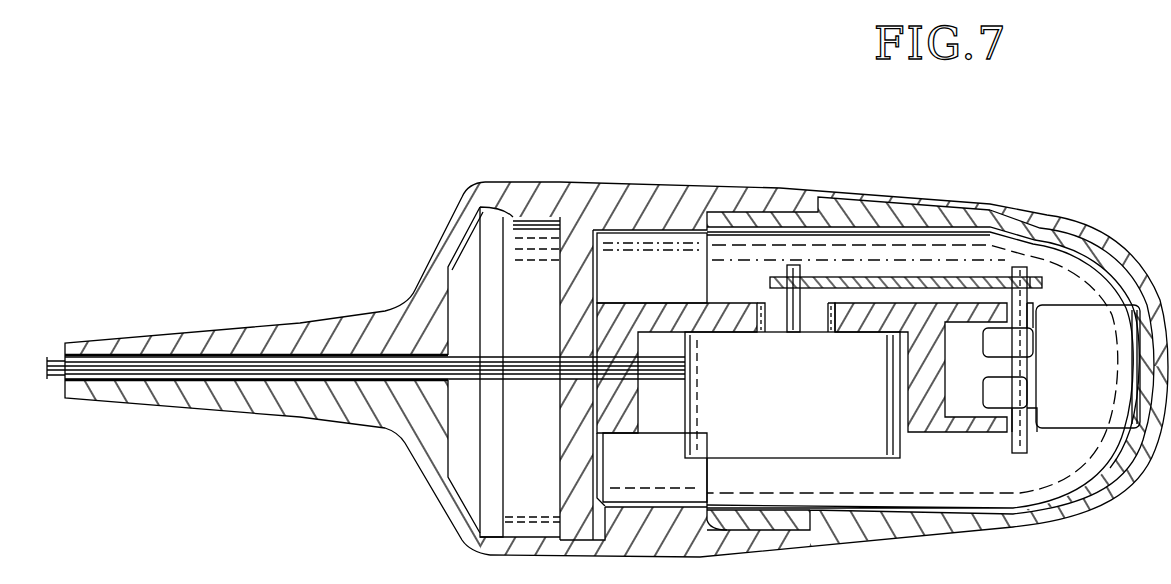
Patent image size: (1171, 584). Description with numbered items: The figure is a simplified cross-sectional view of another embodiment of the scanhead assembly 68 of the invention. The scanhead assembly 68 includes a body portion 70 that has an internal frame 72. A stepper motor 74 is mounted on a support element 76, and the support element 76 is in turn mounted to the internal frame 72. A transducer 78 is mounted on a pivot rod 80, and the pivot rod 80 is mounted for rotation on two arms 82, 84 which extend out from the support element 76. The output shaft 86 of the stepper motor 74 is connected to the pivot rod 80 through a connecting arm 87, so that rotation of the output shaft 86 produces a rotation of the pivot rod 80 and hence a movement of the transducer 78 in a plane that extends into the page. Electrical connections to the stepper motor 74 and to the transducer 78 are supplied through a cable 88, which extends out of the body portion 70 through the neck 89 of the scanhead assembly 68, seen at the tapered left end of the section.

The scanhead assembly 68 is at (418, 250).
The body portion 70 is at (997, 206).
The internal frame 72 is at (682, 208).
The stepper motor 74 is at (850, 440).
The support element 76 is at (722, 322).
The transducer 78 is at (1066, 420).
The pivot rod 80 is at (1022, 277).
The arm 82 is at (948, 420).
The arm 84 is at (975, 317).
The output shaft 86 is at (796, 268).
The connecting arm 87 is at (892, 283).
The cable 88 is at (297, 378).
The neck 89 is at (297, 333).